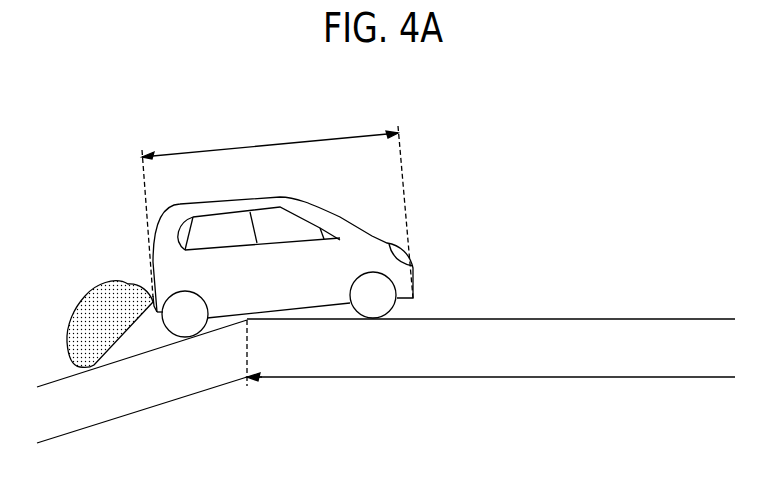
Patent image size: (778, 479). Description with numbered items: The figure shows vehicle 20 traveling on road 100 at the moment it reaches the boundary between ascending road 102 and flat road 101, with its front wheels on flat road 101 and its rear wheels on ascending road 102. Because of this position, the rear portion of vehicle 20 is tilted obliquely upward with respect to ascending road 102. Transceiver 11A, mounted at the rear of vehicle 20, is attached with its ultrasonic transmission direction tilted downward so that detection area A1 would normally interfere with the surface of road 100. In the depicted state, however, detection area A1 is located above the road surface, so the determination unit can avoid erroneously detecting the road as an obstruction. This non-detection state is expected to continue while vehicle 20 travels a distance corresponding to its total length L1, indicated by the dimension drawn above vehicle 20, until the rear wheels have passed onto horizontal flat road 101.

The vehicle 20 is at (229, 205).
The transceiver 11A is at (151, 298).
The detection area A1 is at (92, 296).
The total length L1 is at (277, 208).
The road 100 is at (684, 320).
The flat road 101 is at (378, 353).
The ascending road 102 is at (142, 381).